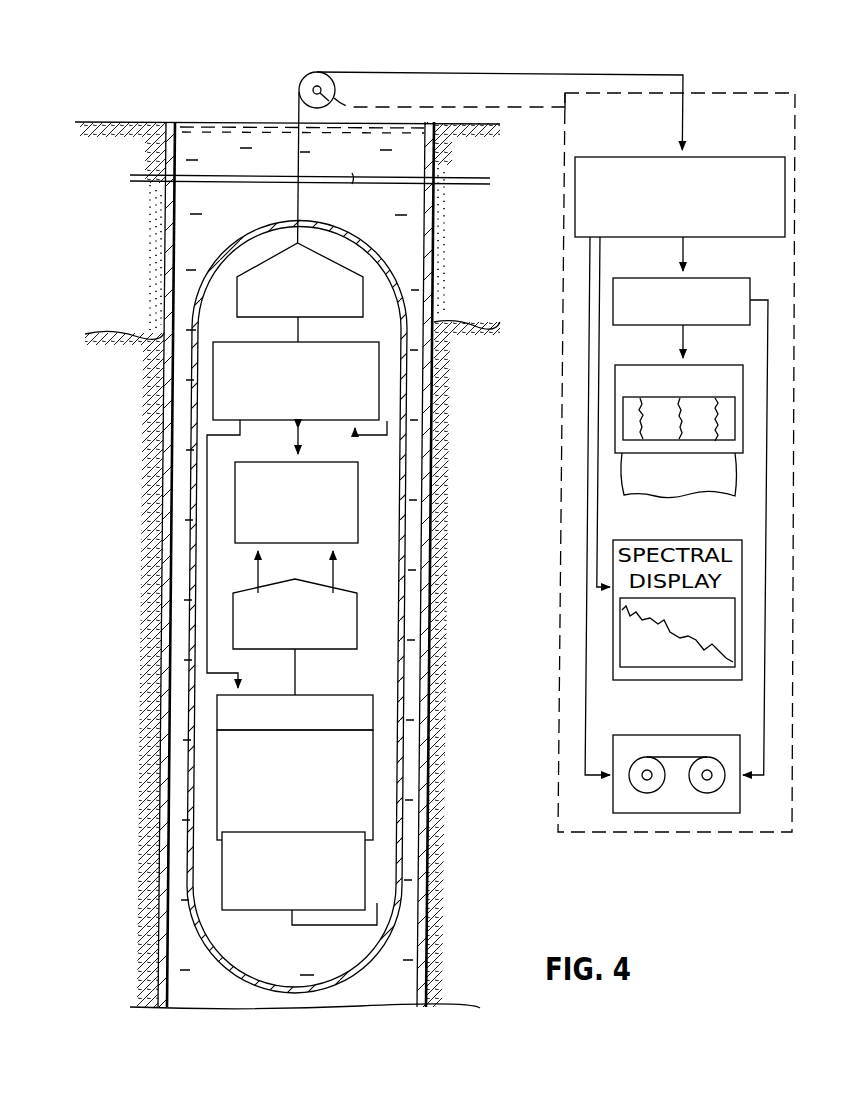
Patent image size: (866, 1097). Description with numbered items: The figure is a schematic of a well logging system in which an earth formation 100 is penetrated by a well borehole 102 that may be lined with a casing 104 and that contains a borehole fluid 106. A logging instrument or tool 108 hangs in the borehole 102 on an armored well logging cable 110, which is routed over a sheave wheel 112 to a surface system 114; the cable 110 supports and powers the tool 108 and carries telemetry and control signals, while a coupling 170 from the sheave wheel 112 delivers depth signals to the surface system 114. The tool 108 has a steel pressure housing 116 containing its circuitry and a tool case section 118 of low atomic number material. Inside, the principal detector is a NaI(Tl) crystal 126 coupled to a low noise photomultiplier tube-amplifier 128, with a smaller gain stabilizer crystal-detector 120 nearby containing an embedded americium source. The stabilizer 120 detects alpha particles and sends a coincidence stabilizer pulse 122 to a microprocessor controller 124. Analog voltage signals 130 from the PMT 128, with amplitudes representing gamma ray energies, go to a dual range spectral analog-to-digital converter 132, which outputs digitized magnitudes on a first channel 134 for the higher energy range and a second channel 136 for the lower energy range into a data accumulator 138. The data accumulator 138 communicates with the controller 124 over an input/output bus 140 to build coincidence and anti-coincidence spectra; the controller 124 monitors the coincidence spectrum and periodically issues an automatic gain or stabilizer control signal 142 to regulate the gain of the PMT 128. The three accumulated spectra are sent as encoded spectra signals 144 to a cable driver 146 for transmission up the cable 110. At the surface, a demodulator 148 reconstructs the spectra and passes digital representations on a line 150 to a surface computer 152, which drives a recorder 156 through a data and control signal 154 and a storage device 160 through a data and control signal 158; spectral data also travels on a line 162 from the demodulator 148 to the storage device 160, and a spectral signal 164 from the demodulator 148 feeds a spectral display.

The earth formation 100 is at (102, 253).
The well borehole 102 is at (200, 110).
The casing 104 is at (160, 368).
The borehole fluid 106 is at (380, 235).
The logging instrument or tool 108 is at (181, 623).
The armored well logging cable 110 is at (297, 142).
The sheave wheel 112 is at (299, 85).
The surface system 114 is at (752, 93).
The steel pressure housing 116 is at (401, 711).
The tool case section 118 is at (394, 840).
The gain stabilizer crystal-detector 120 is at (220, 883).
The coincidence stabilizer pulse 122 is at (389, 428).
The microprocessor controller 124 is at (213, 395).
The NaI(Tl) crystal 126 is at (217, 773).
The photomultiplier tube-amplifier 128 is at (217, 714).
The analog voltage signals 130 is at (297, 673).
The dual range spectral analog-to-digital converter 132 is at (358, 632).
The first channel 134 is at (255, 563).
The second channel 136 is at (335, 568).
The data accumulator 138 is at (358, 487).
The input/output bus 140 is at (300, 440).
The automatic gain or stabilizer control signal 142 is at (215, 440).
The encoded spectra signals 144 is at (296, 328).
The cable driver 146 is at (363, 291).
The demodulator 148 is at (717, 157).
The line 150 is at (684, 252).
The surface computer 152 is at (751, 287).
The data and control signal 154 is at (680, 337).
The recorder 156 is at (744, 396).
The data and control signal 158 is at (765, 514).
The storage device 160 is at (697, 735).
The line 162 is at (587, 714).
The spectral signal 164 is at (594, 527).
The coupling 170 is at (423, 106).